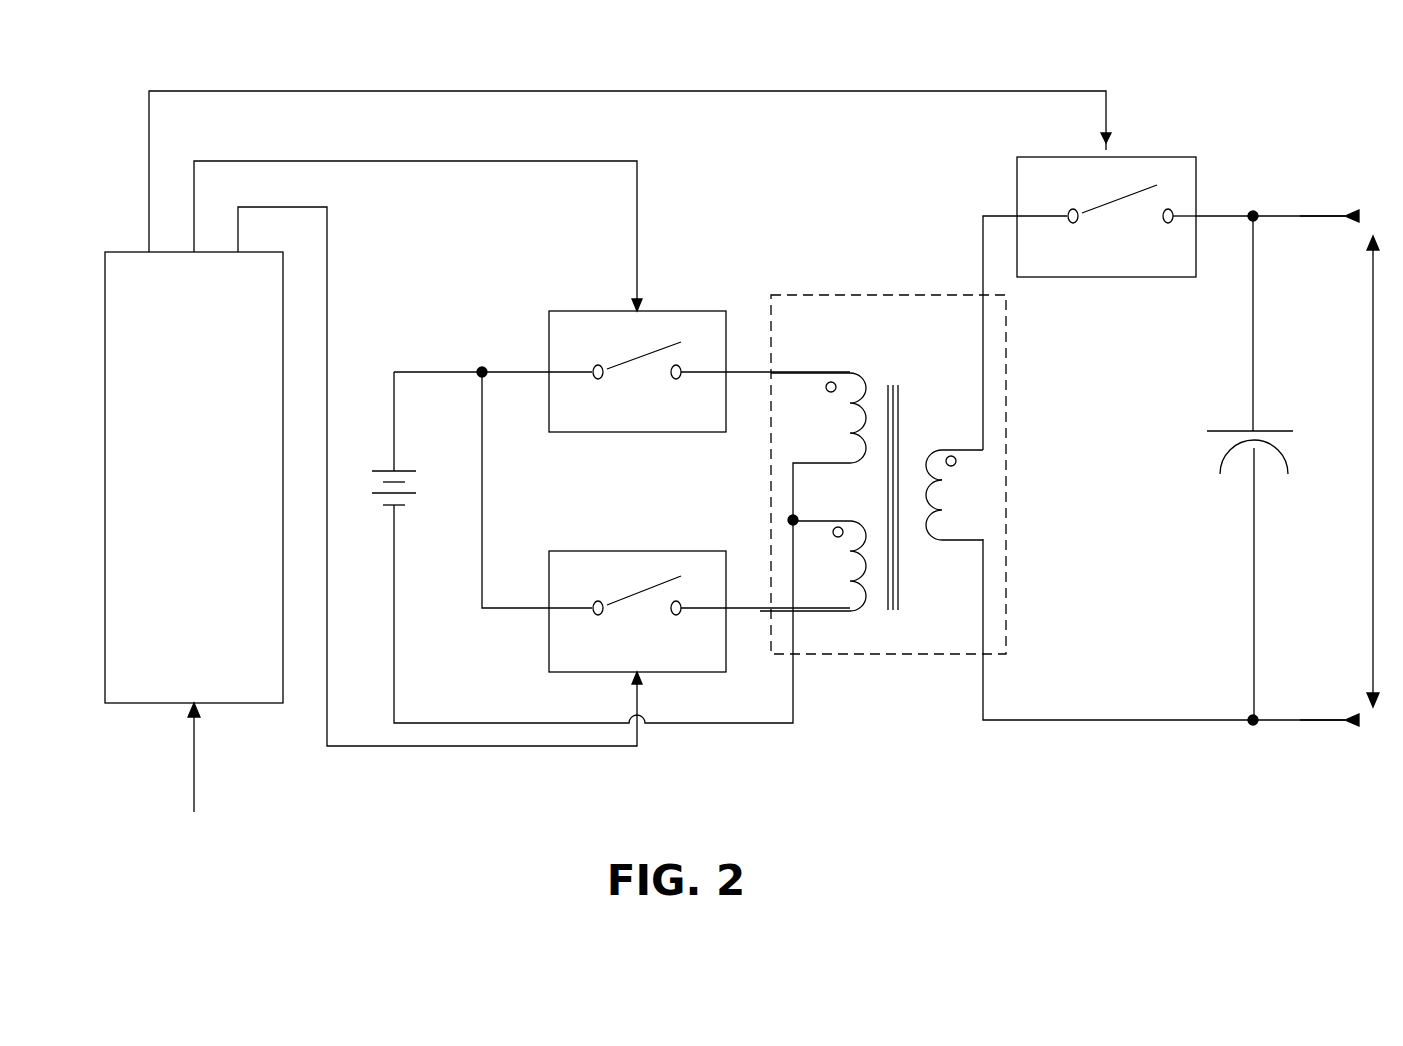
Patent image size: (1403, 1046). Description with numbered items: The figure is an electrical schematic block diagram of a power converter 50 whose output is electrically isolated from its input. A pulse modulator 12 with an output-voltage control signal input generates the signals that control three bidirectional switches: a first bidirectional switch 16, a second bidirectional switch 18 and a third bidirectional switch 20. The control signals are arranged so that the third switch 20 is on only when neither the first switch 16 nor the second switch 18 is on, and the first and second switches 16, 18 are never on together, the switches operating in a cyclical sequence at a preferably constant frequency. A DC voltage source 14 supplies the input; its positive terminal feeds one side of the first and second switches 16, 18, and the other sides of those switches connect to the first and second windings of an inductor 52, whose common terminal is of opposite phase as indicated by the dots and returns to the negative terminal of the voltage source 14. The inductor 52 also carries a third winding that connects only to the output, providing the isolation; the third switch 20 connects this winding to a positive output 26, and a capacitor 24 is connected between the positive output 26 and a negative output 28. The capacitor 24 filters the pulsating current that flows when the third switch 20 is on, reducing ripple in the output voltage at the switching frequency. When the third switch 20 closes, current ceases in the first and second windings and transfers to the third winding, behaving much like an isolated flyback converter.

The power converter 50 is at (748, 464).
The pulse modulator circuit 12 is at (194, 477).
The voltage source 14 is at (413, 505).
The bidirectional switch 16 is at (637, 371).
The bidirectional switch 18 is at (637, 611).
The third bidirectional switch 20 is at (1106, 217).
The capacitor 24 is at (1275, 428).
The positive output 26 is at (1352, 195).
The negative output 28 is at (1328, 740).
The inductor 52 is at (893, 656).